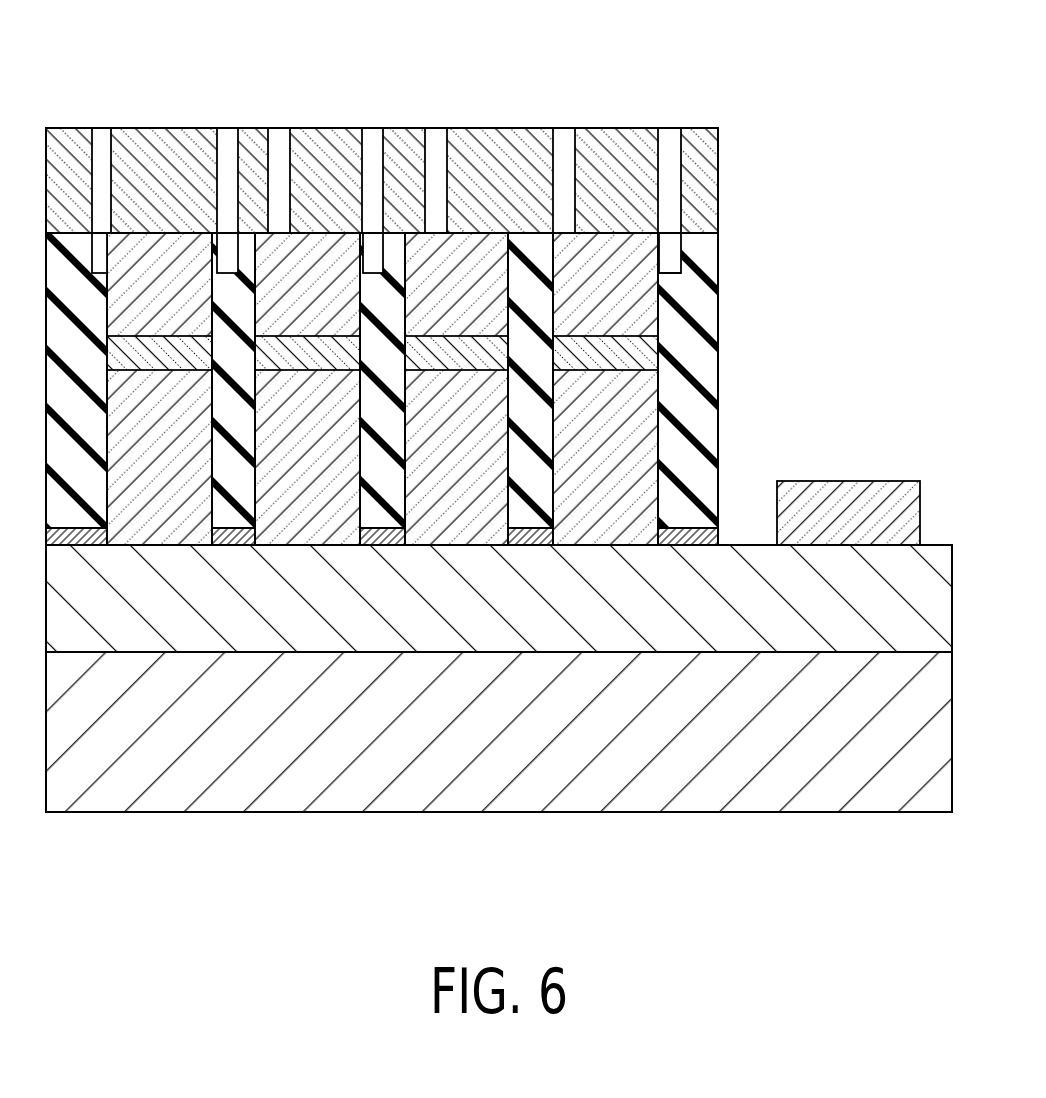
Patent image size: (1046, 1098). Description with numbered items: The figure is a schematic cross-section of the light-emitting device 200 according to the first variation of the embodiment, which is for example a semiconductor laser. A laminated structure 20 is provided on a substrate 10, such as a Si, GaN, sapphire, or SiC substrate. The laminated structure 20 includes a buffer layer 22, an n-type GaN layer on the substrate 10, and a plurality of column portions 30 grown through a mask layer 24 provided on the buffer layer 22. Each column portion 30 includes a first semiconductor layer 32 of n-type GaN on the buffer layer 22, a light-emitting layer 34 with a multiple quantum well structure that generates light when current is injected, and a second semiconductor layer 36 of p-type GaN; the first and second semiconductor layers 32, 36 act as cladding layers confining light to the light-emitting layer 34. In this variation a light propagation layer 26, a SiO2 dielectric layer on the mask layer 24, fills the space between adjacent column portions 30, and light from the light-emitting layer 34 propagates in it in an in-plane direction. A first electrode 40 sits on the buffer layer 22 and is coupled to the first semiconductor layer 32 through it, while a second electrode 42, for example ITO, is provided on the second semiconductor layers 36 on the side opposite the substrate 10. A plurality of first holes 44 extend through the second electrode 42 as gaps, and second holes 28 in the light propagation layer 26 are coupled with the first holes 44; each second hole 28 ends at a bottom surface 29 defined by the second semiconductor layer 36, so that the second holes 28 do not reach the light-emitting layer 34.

The substrate 10 is at (358, 740).
The laminated structure 20 is at (817, 270).
The buffer layer 22 is at (458, 618).
The mask layer 24 is at (717, 505).
The light propagation layer 26 is at (533, 367).
The second hole 28 is at (98, 257).
The bottom surface 29 is at (672, 270).
The column portion 30 is at (160, 287).
The first semiconductor layer 32 is at (628, 407).
The light-emitting layer 34 is at (632, 353).
The second semiconductor layer 36 is at (637, 301).
The first electrode 40 is at (865, 505).
The second electrode 42 is at (608, 153).
The first hole 44 is at (105, 150).
The light-emitting device 200 is at (787, 178).